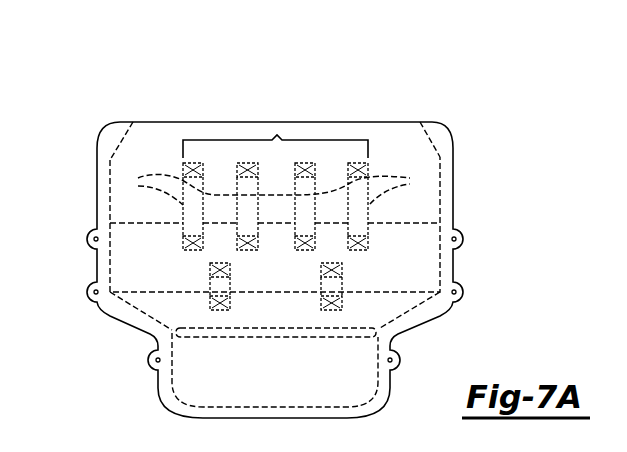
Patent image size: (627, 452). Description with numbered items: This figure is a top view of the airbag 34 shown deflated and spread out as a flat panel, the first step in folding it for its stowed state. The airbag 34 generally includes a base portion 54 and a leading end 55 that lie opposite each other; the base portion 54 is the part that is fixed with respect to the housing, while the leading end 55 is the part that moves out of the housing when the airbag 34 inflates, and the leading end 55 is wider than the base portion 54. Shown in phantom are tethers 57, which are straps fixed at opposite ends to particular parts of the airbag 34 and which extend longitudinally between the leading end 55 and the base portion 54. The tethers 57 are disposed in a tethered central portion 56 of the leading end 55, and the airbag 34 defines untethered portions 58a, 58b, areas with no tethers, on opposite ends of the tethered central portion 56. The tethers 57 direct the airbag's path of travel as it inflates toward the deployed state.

The airbag 34 is at (247, 123).
The base portion 54 is at (190, 374).
The leading end 55 is at (337, 132).
The tethered central portion 56 is at (277, 138).
The tethers 57 is at (277, 189).
The untethered portion 58a is at (138, 134).
The untethered portion 58b is at (413, 134).